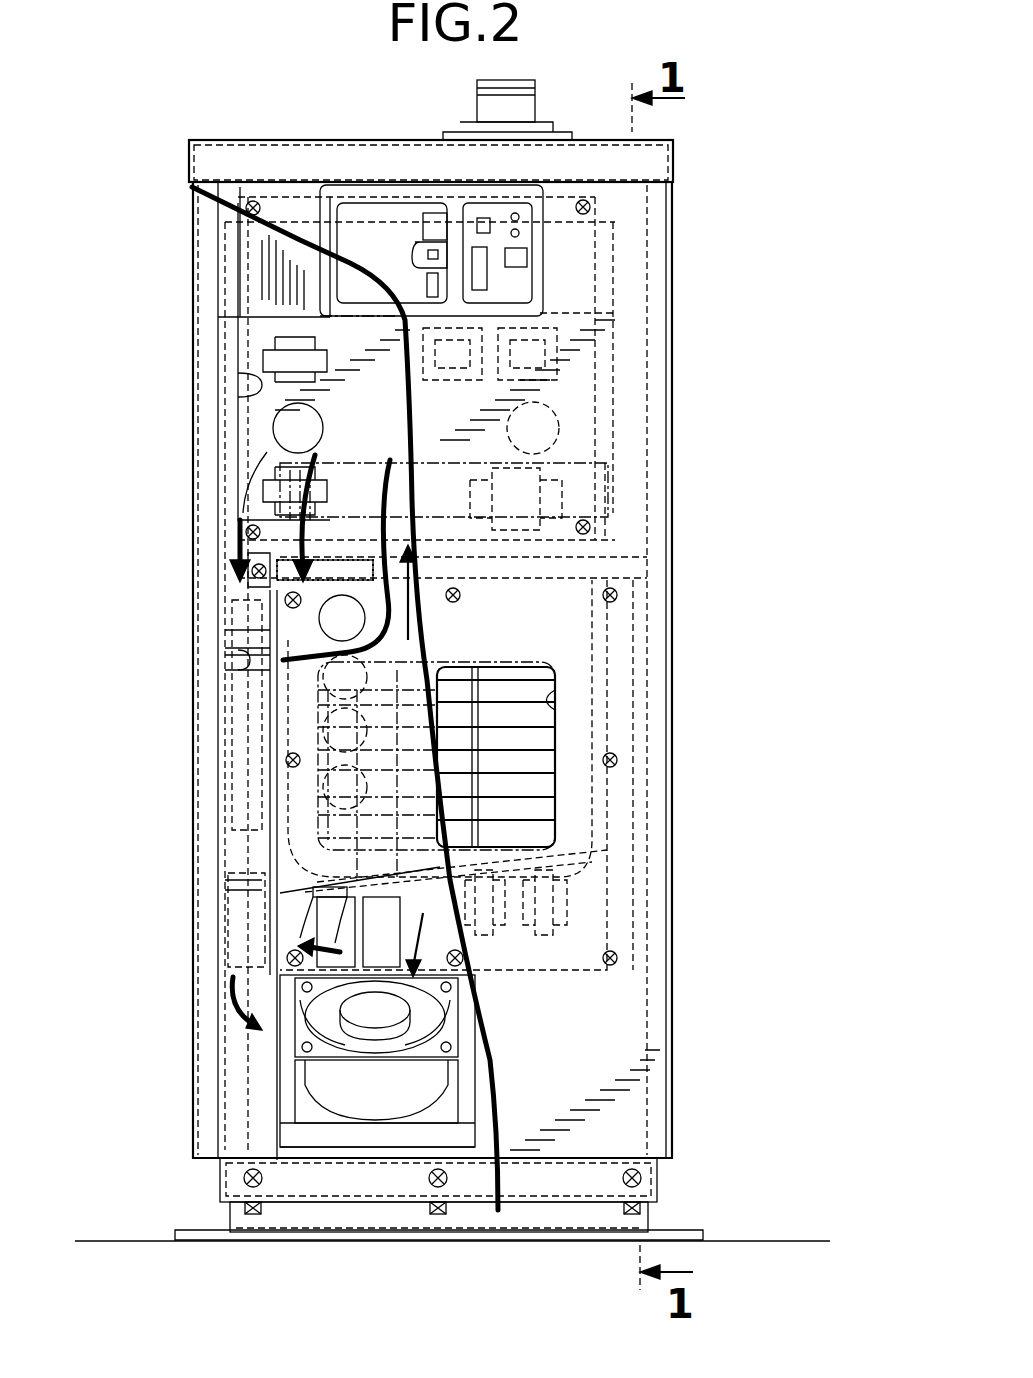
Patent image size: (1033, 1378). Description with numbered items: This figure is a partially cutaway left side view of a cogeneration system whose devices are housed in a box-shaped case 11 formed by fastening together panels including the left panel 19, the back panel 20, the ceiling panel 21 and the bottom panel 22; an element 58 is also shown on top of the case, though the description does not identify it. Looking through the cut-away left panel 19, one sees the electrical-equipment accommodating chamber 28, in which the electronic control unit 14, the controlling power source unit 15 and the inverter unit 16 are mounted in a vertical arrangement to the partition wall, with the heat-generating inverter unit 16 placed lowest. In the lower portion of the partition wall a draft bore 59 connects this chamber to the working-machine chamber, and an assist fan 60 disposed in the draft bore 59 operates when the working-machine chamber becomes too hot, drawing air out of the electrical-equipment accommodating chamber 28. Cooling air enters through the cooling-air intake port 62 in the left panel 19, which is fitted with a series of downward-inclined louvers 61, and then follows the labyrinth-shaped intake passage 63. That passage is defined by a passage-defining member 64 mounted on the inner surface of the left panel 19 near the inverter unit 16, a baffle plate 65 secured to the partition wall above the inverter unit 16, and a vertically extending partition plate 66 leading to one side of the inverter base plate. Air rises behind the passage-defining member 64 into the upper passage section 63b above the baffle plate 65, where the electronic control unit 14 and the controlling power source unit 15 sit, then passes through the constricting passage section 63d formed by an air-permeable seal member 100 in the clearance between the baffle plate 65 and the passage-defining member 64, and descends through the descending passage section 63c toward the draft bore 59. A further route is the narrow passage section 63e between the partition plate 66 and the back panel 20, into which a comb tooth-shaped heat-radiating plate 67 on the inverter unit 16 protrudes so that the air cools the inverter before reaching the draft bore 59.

The case 11 is at (196, 1069).
The electronic control unit 14 is at (263, 268).
The controlling power source unit 15 is at (238, 433).
The inverter unit 16 is at (633, 846).
The left panel 19 is at (633, 408).
The back panel 20 is at (193, 525).
The ceiling panel 21 is at (296, 140).
The bottom panel 22 is at (357, 1205).
The electrical-equipment accommodating chamber 28 is at (385, 412).
The exhaust pipe 58 is at (487, 112).
The draft bore 59 is at (458, 1107).
The assist fan 60 is at (298, 1033).
The louvers 61 is at (498, 708).
The cooling-air intake port 62 is at (548, 700).
The labyrinth-shaped intake passage 63 is at (396, 775).
The upper passage section 63b is at (245, 397).
The descending passage section 63c is at (440, 932).
The constricting passage section 63d is at (314, 504).
The narrow passage section 63e is at (240, 668).
The passage-defining member 64 is at (612, 640).
The baffle plate 65 is at (406, 512).
The partition plate 66 is at (270, 815).
The heat-radiating plate 67 is at (242, 922).
The air-permeable seal member 100 is at (290, 600).